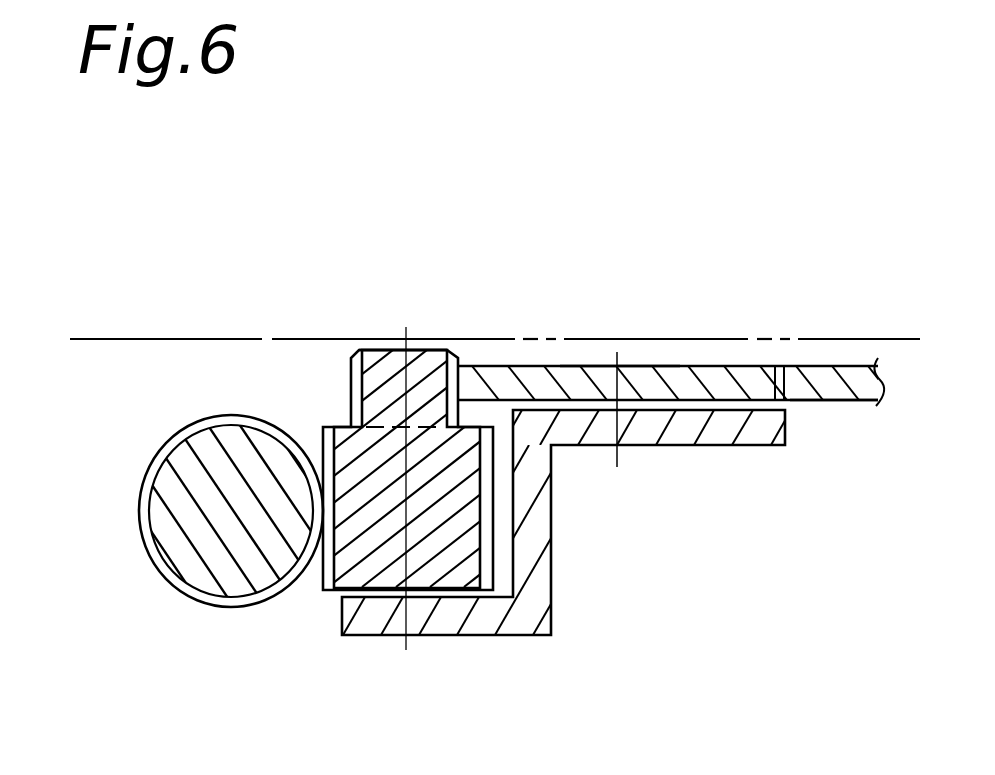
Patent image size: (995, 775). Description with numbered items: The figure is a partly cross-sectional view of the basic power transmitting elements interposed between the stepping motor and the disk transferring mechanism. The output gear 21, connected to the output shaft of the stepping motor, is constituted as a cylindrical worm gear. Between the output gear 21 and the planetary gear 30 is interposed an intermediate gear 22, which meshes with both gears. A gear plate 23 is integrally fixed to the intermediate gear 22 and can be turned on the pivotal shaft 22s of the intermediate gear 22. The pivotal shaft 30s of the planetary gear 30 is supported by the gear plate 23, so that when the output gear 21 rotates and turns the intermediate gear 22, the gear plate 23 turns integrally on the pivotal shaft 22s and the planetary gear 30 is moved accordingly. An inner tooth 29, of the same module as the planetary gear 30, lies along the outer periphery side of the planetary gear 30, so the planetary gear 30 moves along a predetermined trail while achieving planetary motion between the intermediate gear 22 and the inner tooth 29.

The output gear 21 is at (170, 532).
The intermediate gear 22 is at (422, 360).
The pivotal shaft of the intermediate gear 22s is at (407, 362).
The gear plate 23 is at (552, 550).
The inner tooth 29 is at (832, 403).
The planetary gear 30 is at (688, 364).
The pivotal shaft of the planetary gear 30s is at (612, 383).